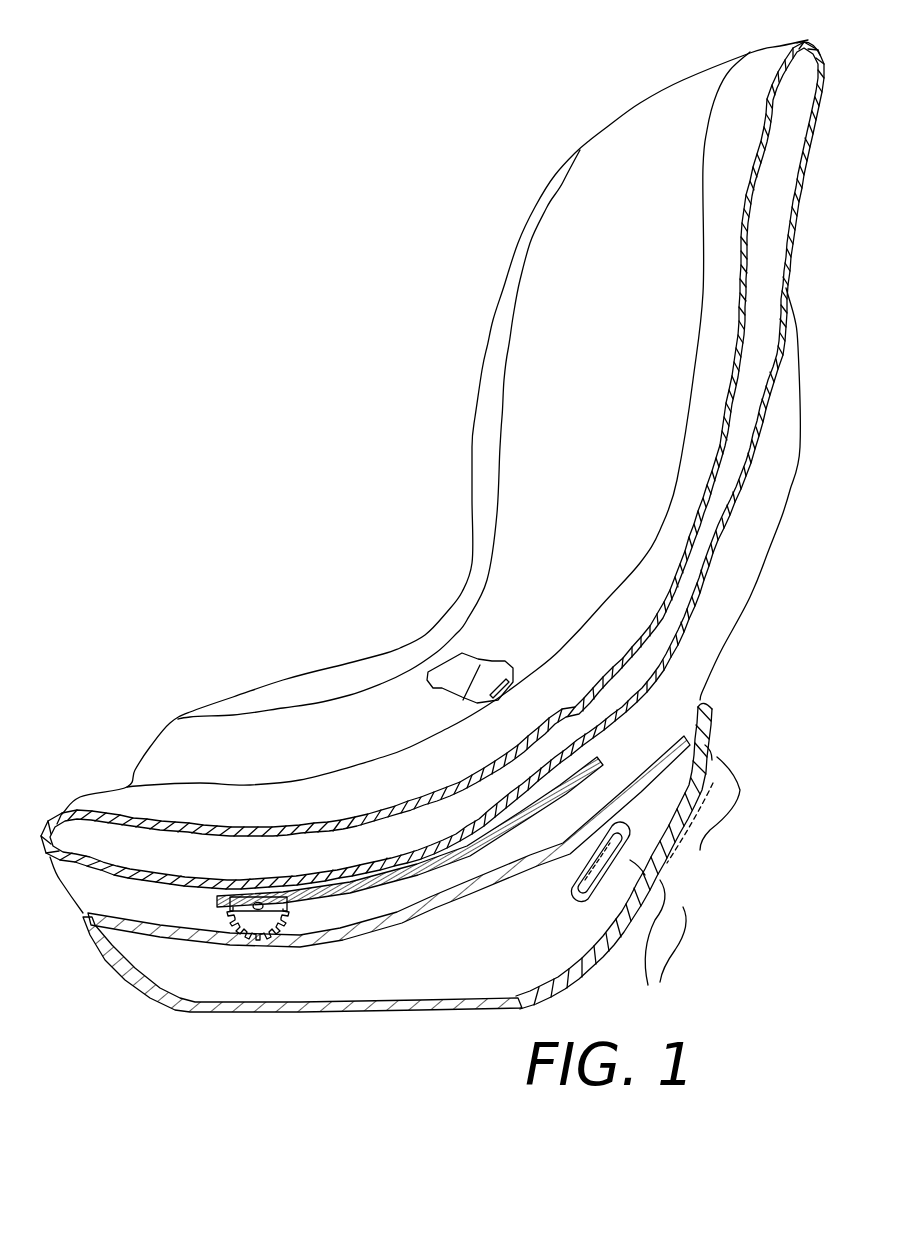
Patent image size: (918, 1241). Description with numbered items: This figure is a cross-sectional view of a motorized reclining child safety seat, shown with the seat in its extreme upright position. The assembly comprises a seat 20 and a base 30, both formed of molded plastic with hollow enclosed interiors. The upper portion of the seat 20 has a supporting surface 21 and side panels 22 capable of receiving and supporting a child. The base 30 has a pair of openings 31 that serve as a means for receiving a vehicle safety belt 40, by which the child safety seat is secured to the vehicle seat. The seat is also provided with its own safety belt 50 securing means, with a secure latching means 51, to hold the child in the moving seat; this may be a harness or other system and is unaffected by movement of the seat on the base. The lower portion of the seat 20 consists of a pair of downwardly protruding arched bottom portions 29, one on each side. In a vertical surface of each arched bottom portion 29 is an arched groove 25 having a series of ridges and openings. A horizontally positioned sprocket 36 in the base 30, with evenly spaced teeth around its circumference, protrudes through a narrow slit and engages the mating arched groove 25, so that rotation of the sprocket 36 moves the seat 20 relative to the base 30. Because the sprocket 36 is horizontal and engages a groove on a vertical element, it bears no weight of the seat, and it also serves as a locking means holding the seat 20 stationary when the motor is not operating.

The seat 20 is at (805, 40).
The supporting surface 21 is at (92, 797).
The side panels 22 is at (472, 471).
The arched groove 25 is at (390, 890).
The arched bottom portion 29 is at (73, 892).
The base 30 is at (713, 723).
The openings 31 is at (567, 893).
The sprocket 36 is at (247, 942).
The vehicle safety belt 40 is at (697, 860).
The safety belt 50 is at (443, 692).
The latching means 51 is at (518, 652).